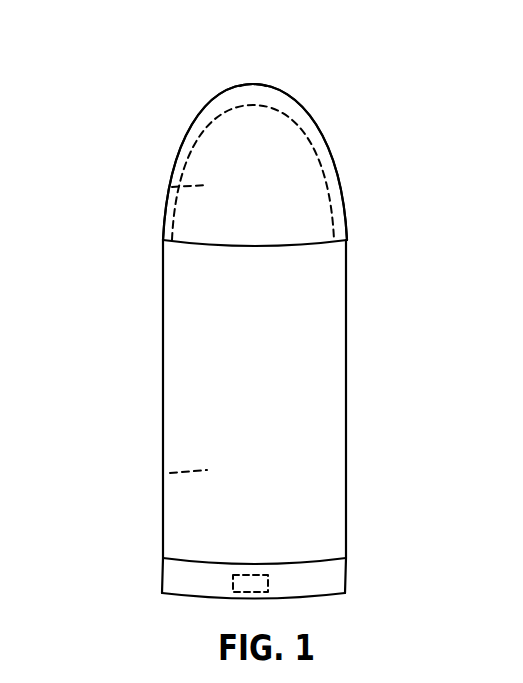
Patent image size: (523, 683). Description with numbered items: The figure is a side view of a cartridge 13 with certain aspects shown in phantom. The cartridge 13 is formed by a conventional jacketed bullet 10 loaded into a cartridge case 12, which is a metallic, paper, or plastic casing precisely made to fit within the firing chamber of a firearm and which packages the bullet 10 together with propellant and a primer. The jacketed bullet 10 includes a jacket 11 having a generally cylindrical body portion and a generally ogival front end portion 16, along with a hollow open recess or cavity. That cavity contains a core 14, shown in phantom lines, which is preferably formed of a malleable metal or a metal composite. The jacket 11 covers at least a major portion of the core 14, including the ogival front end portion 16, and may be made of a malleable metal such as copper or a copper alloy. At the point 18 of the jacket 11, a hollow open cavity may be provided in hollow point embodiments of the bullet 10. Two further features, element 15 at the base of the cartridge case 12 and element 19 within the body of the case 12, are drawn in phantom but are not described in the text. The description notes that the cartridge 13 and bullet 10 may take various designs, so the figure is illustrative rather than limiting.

The jacketed bullet 10 is at (300, 196).
The jacket 11 is at (313, 119).
The cartridge case 12 is at (302, 419).
The cartridge 13 is at (125, 364).
The core 14 is at (172, 188).
The internal component in base 15 is at (268, 585).
The ogival front end portion 16 is at (311, 155).
The point 18 is at (258, 84).
The internal component in body 19 is at (170, 474).